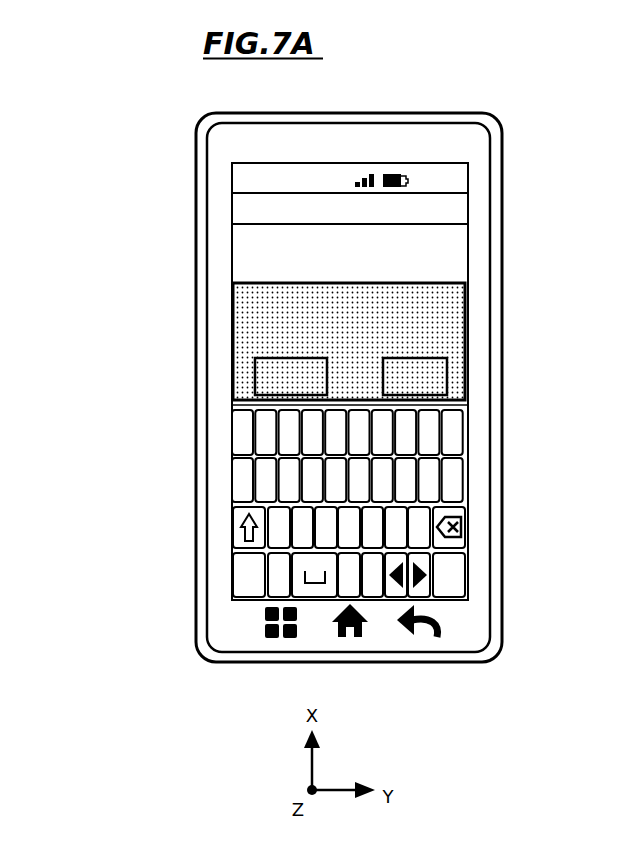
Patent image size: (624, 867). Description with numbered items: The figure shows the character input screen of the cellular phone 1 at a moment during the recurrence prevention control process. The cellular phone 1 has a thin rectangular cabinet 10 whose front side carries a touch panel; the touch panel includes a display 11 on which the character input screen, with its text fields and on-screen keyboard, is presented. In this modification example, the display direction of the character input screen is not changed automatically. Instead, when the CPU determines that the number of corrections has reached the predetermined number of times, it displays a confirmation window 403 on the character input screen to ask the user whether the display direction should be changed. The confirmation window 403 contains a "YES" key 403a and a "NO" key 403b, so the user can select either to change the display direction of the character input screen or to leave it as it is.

The cellular phone 1 is at (509, 156).
The cabinet 10 is at (502, 213).
The display 11 is at (468, 277).
The confirmation window 403 is at (452, 348).
The "YES" key 403a is at (240, 385).
The "NO" key 403b is at (443, 377).